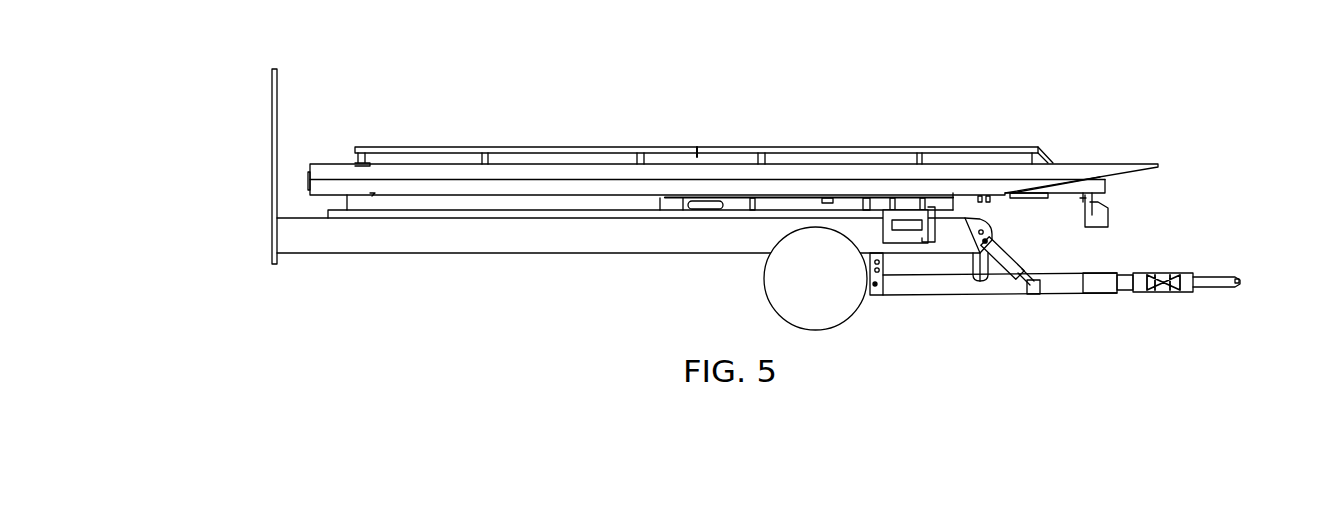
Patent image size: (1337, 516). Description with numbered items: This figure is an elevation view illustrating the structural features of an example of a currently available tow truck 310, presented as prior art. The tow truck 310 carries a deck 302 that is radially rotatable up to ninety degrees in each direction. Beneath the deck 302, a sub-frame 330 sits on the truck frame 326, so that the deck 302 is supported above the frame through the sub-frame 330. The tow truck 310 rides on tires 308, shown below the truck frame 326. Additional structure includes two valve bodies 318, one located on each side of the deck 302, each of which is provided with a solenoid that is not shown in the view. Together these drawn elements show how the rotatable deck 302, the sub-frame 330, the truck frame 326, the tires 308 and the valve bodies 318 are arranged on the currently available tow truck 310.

The deck 302 is at (323, 170).
The tires 308 is at (780, 291).
The tow truck 310 is at (272, 85).
The valve bodies 318 is at (905, 238).
The truck frame 326 is at (340, 253).
The sub-frame 330 is at (528, 200).